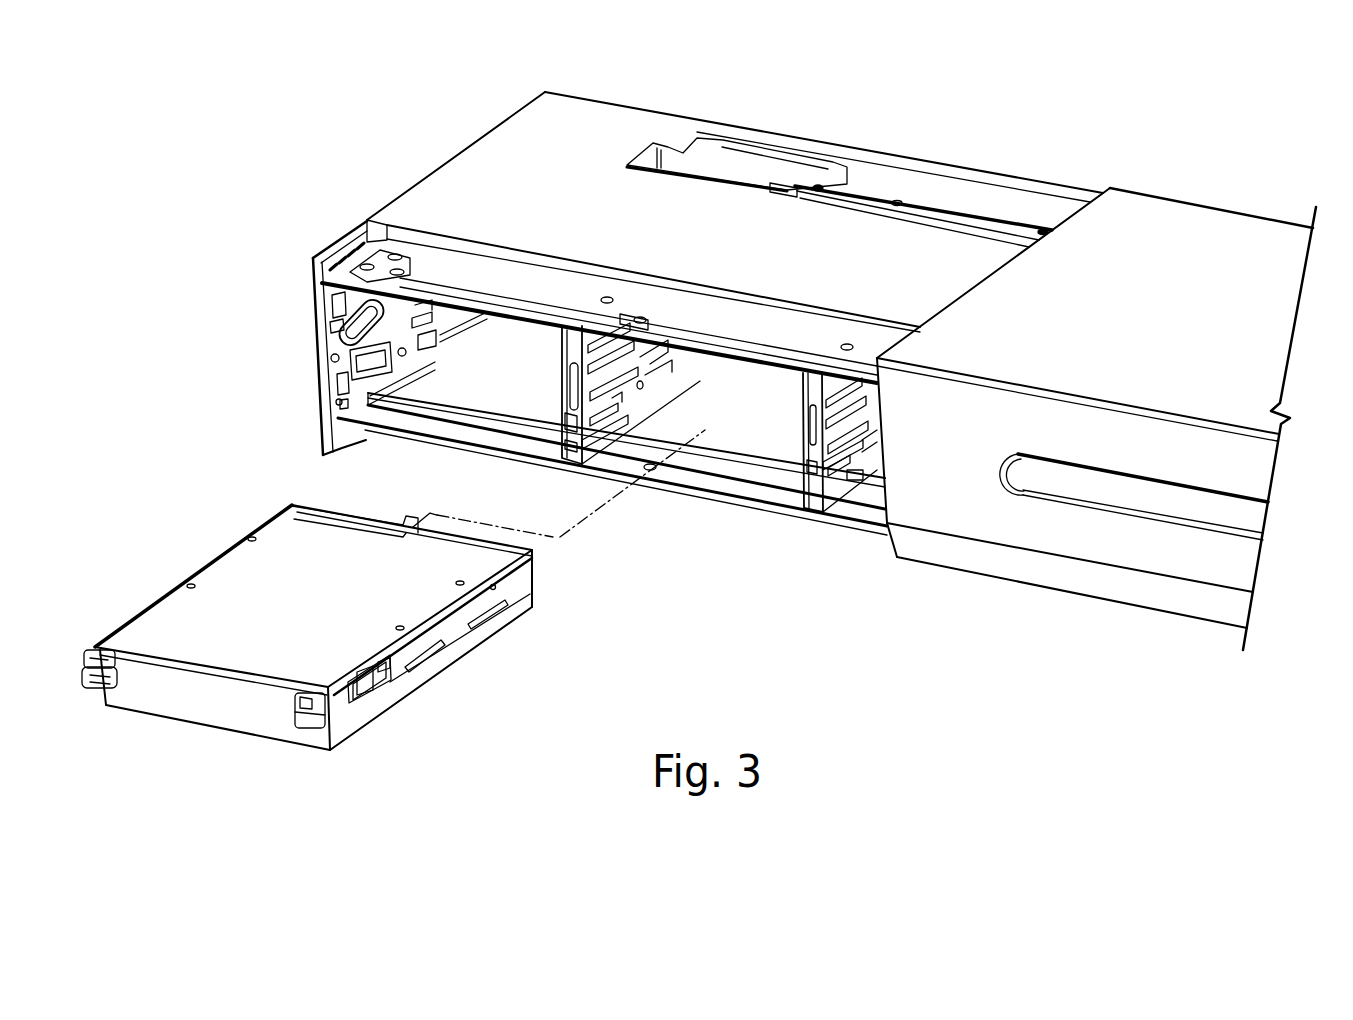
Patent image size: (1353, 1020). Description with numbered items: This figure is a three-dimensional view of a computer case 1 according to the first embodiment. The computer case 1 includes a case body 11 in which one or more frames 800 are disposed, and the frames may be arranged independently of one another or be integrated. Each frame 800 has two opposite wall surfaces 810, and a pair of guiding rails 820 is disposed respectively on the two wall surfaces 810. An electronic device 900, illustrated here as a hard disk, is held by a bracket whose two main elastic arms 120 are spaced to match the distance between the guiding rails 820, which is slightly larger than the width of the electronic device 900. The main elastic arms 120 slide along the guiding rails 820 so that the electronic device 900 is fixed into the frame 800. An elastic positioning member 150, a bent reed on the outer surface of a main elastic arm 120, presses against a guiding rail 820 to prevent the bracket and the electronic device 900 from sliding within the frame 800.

The computer case 1 is at (1126, 153).
The case body 11 is at (1197, 220).
The main elastic arms 120 is at (168, 591).
The elastic positioning member 150 is at (380, 683).
The frame 800 is at (778, 252).
The wall surfaces 810 is at (600, 432).
The guiding rails 820 is at (800, 458).
The electronic device 900 is at (275, 570).